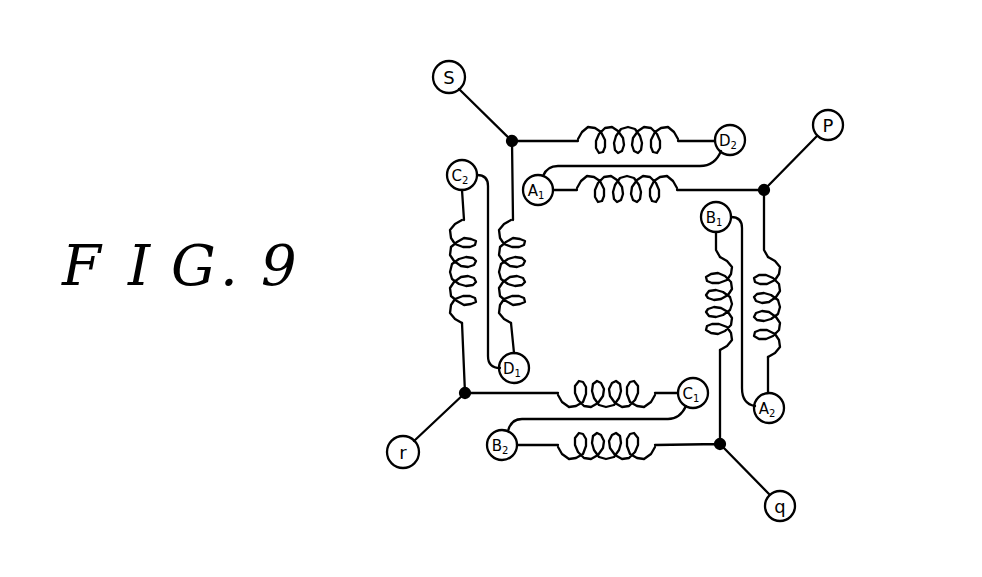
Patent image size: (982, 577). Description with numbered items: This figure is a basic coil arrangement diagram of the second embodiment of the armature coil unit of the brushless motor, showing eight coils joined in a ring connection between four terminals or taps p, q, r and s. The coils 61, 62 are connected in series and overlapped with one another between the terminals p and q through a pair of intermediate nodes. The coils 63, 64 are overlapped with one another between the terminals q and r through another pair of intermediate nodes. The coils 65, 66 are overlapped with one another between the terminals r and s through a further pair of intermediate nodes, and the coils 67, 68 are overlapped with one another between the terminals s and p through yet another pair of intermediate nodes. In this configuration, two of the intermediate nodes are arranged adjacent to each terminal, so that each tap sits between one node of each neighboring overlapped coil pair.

The coil 61 is at (778, 266).
The coil 62 is at (730, 350).
The coil 63 is at (610, 459).
The coil 64 is at (560, 400).
The coil 65 is at (450, 295).
The coil 66 is at (502, 229).
The coil 67 is at (628, 126).
The coil 68 is at (666, 184).